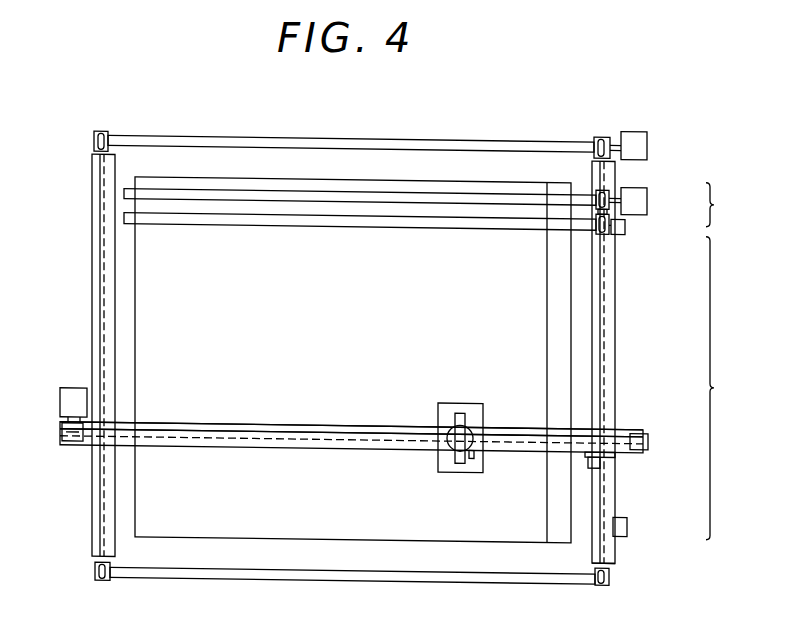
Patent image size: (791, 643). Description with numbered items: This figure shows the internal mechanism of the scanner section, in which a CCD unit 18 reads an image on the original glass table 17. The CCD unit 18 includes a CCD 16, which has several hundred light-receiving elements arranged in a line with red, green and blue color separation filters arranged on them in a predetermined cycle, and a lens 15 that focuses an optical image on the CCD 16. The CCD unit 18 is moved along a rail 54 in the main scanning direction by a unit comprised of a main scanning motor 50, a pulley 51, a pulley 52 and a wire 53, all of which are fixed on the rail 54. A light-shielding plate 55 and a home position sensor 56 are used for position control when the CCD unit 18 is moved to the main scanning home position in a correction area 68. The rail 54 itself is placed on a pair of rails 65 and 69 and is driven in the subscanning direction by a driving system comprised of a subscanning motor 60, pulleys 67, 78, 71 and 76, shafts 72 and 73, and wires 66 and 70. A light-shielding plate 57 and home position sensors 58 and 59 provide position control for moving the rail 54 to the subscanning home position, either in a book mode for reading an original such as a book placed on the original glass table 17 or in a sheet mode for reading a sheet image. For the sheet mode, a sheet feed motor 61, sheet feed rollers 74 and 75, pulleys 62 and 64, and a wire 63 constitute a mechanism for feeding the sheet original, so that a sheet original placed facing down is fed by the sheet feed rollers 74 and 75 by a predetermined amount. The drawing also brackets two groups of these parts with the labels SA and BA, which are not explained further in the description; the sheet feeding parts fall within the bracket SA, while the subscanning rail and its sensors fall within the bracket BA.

The lens 15 is at (466, 421).
The CCD 16 is at (458, 459).
The original glass table 17 is at (258, 537).
The CCD unit 18 is at (440, 399).
The main scanning motor 50 is at (62, 389).
The pulley 51 is at (68, 446).
The pulley 52 is at (648, 435).
The wire 53 is at (333, 423).
The rail 54 is at (255, 446).
The light-shielding plate 55 is at (474, 451).
The home position sensor 56 is at (600, 462).
The light-shielding plate 57 is at (615, 449).
The home position sensor 58 is at (627, 520).
The home position sensor 59 is at (626, 226).
The subscanning motor 60 is at (648, 138).
The sheet feed motor 61 is at (648, 194).
The pulley 62 is at (610, 184).
The wire 63 is at (610, 214).
The pulley 64 is at (606, 232).
The rail 65 is at (615, 343).
The wire 66 is at (615, 550).
The pulley 67 is at (602, 579).
The correction area 68 is at (560, 537).
The rail 69 is at (92, 298).
The wire 70 is at (99, 512).
The pulley 71 is at (102, 581).
The shaft 72 is at (380, 136).
The shaft 73 is at (335, 578).
The sheet feed roller 74 is at (265, 199).
The sheet feed roller 75 is at (375, 224).
The pulley 76 is at (602, 131).
The pulley 78 is at (99, 132).
The scanning assembly SA is at (724, 205).
The base assembly BA is at (726, 389).